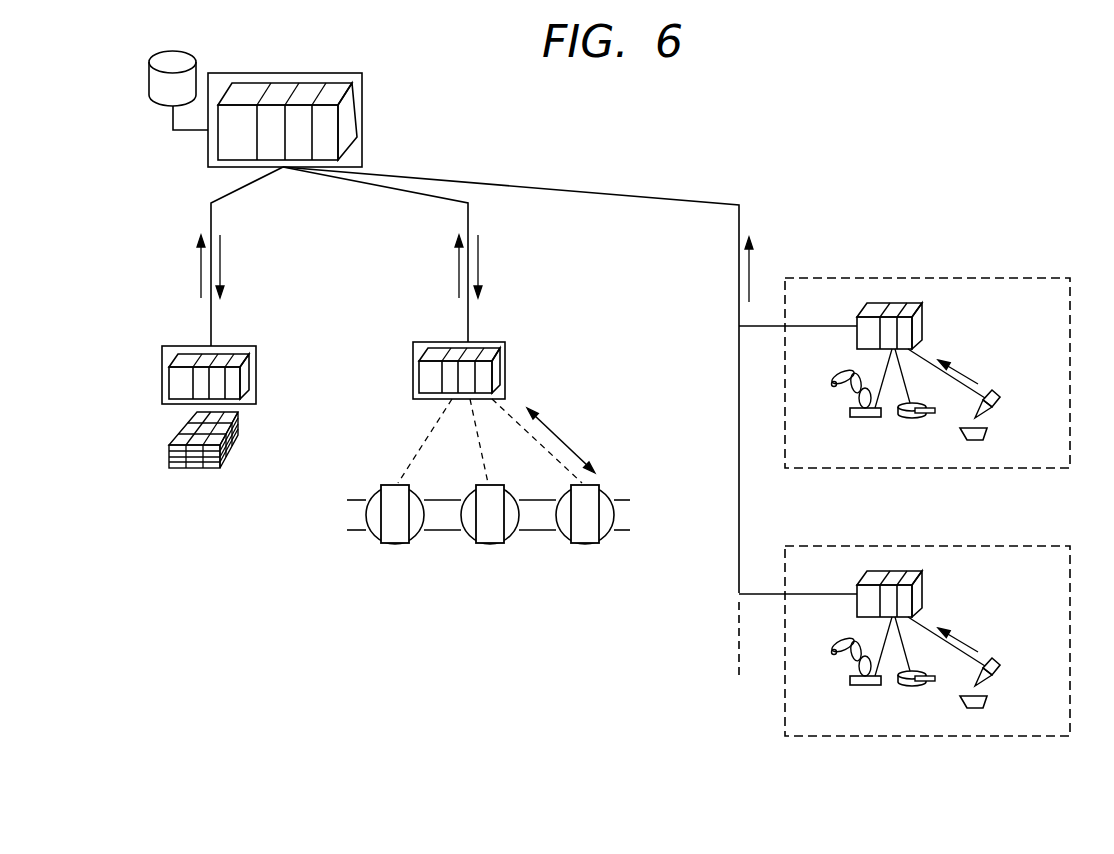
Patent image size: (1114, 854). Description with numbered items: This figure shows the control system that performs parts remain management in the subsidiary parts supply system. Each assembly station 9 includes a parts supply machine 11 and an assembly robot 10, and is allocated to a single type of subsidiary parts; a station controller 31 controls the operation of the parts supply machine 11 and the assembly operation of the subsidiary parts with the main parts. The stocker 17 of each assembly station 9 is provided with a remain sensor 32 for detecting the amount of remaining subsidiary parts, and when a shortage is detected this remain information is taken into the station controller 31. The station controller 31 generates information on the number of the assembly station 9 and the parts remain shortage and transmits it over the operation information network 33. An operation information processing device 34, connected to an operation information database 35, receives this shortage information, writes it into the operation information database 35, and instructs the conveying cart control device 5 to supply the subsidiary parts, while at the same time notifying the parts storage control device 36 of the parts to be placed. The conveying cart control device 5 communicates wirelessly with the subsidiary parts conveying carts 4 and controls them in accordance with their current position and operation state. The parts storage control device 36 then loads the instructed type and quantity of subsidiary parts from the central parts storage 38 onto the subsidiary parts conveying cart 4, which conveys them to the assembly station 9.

The subsidiary parts conveying cart 4 is at (398, 537).
The conveying cart control device 5 is at (505, 362).
The assembly station 9 is at (892, 278).
The assembly robot 10 is at (857, 417).
The parts supply machine 11 is at (912, 418).
The stocker 17 is at (987, 432).
The station controller 31 is at (860, 312).
The remain sensor 32 is at (1000, 398).
The operation information network 33 is at (607, 190).
The operation information processing device 34 is at (362, 123).
The operation information database 35 is at (160, 100).
The parts storage control device 36 is at (256, 372).
The central parts storage 38 is at (193, 470).